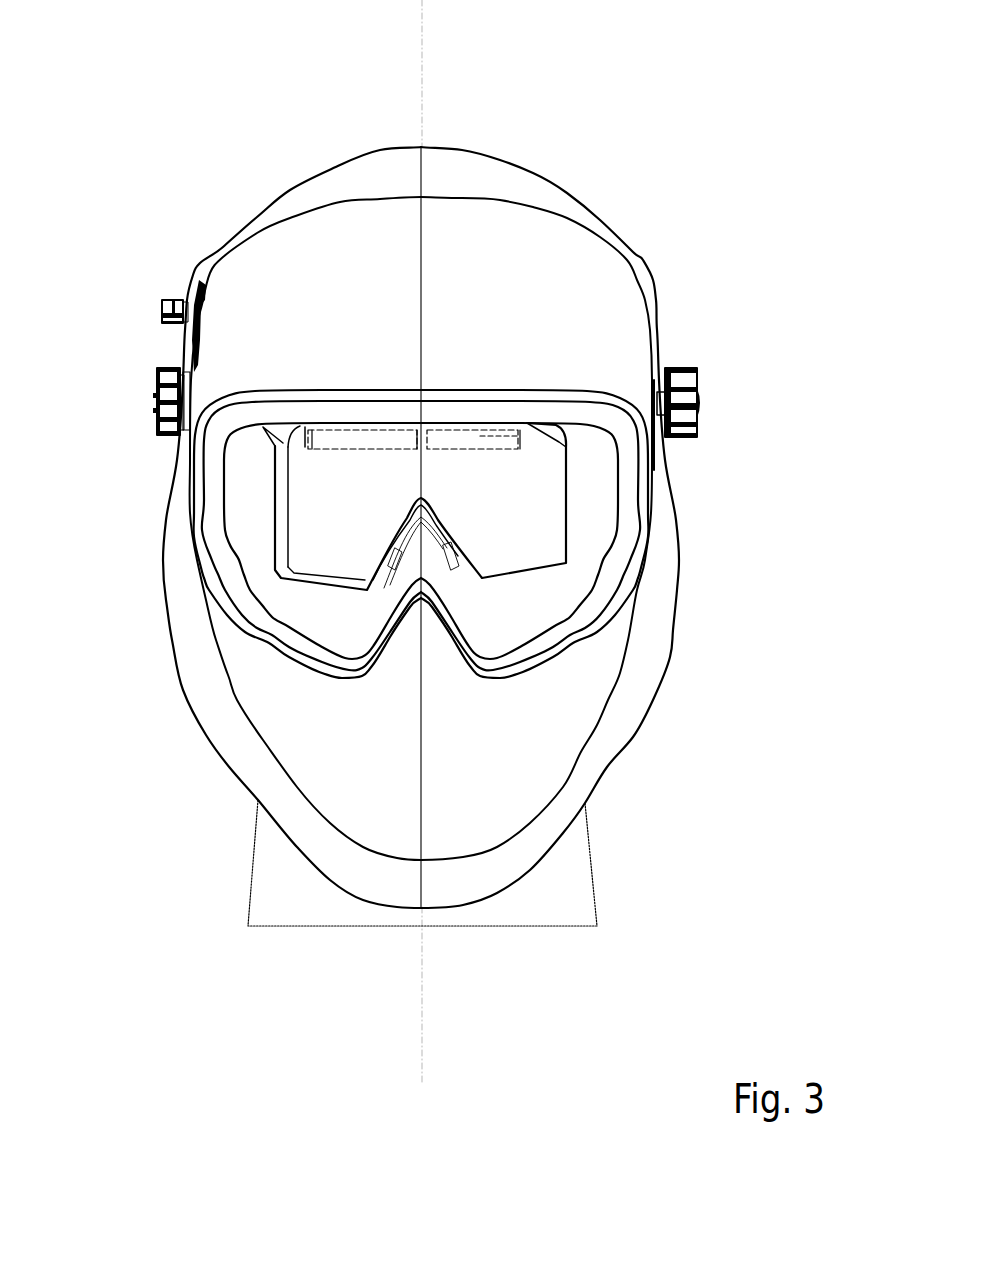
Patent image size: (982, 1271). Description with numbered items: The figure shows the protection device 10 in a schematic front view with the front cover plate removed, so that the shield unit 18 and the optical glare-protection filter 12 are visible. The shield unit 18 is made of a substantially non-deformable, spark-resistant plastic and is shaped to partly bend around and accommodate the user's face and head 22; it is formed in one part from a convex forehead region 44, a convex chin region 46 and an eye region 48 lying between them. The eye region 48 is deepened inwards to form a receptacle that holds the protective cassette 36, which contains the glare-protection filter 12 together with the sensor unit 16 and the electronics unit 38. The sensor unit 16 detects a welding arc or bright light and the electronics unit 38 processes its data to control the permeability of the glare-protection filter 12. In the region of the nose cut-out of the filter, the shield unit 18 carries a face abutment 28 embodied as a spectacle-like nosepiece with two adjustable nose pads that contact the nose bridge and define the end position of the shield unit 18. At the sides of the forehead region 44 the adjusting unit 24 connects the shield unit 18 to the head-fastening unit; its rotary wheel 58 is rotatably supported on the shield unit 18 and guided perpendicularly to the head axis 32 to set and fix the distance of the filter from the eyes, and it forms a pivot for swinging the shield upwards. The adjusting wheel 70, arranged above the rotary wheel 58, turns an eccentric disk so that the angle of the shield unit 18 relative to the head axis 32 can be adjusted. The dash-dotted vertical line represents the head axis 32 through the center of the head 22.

The protection device 10 is at (629, 130).
The optical glare-protection filter 12 is at (527, 507).
The sensor unit 16 is at (517, 438).
The shield unit 18 is at (547, 160).
The user's head 22 is at (553, 888).
The adjusting unit 24 is at (137, 408).
The face abutment 28 is at (382, 590).
The head axis 32 is at (421, 17).
The protective cassette 36 is at (259, 507).
The electronics unit 38 is at (305, 441).
The forehead region 44 is at (351, 235).
The chin region 46 is at (545, 728).
The eye region 48 is at (558, 593).
The rotary wheel 58 is at (167, 378).
The adjusting wheel 70 is at (162, 303).